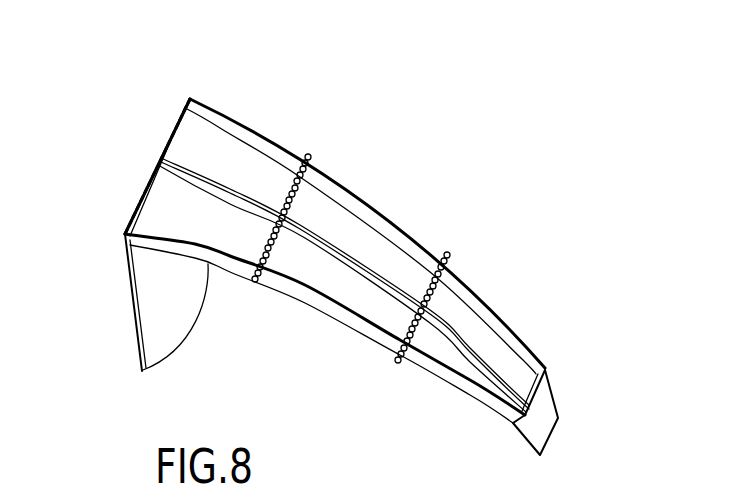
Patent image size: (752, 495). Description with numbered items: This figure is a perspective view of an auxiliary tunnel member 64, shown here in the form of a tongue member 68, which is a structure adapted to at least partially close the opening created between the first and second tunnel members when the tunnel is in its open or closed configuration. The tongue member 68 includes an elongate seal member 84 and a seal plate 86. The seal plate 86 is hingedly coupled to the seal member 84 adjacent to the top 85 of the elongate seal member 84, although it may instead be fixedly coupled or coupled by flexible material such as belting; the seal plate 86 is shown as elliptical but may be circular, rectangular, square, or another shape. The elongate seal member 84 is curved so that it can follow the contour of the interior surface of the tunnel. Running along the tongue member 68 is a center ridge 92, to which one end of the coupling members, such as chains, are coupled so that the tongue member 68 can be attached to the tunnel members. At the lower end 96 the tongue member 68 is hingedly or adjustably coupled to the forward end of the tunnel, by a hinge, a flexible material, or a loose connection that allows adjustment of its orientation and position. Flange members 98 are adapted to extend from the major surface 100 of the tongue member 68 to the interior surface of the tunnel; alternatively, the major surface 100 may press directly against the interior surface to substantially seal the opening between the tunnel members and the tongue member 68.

The auxiliary tunnel member 64 is at (420, 150).
The tongue member 68 is at (420, 200).
The elongate seal member 84 is at (235, 162).
The top 85 is at (148, 162).
The seal plate 86 is at (105, 343).
The center ridge 92 is at (475, 337).
The lower end 96 is at (541, 420).
The flange members 98 is at (457, 278).
The major surface 100 is at (310, 260).